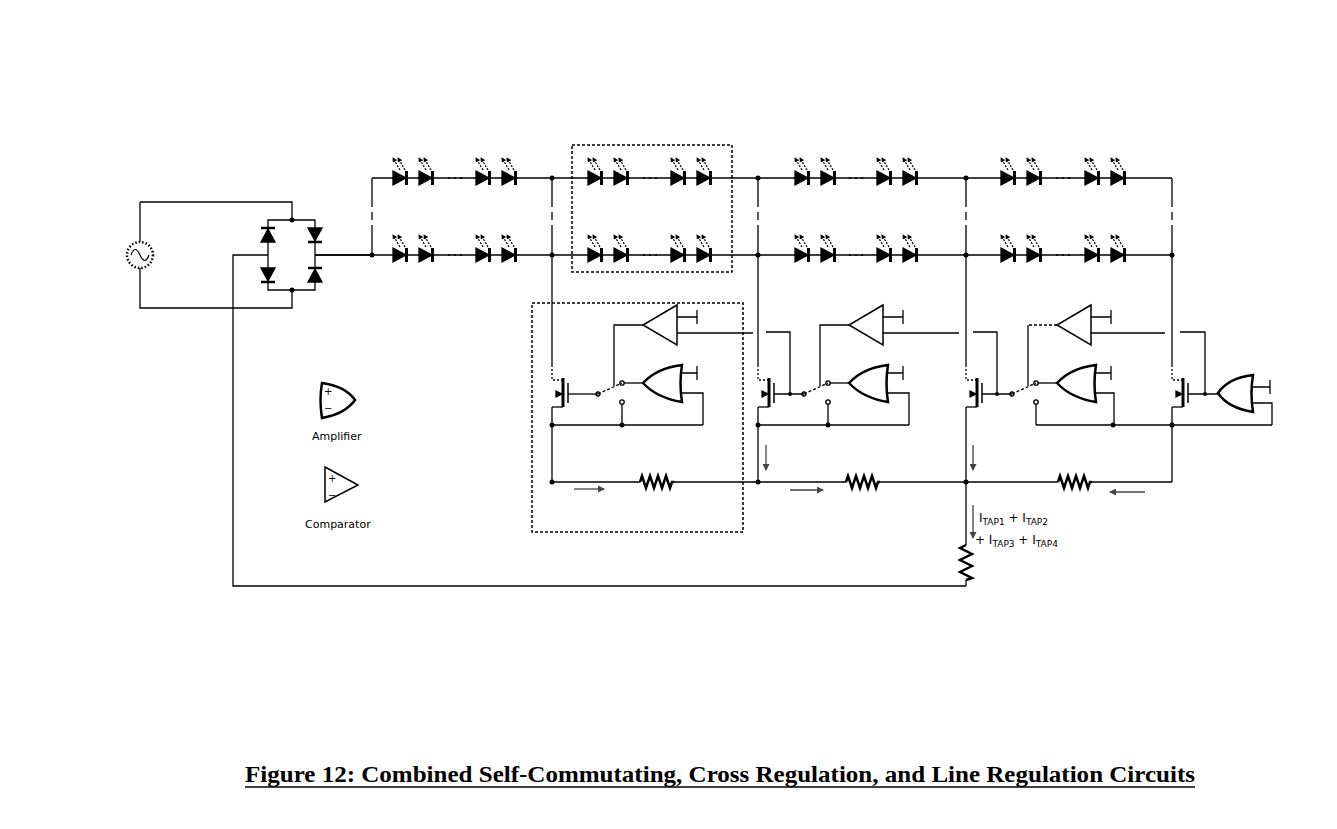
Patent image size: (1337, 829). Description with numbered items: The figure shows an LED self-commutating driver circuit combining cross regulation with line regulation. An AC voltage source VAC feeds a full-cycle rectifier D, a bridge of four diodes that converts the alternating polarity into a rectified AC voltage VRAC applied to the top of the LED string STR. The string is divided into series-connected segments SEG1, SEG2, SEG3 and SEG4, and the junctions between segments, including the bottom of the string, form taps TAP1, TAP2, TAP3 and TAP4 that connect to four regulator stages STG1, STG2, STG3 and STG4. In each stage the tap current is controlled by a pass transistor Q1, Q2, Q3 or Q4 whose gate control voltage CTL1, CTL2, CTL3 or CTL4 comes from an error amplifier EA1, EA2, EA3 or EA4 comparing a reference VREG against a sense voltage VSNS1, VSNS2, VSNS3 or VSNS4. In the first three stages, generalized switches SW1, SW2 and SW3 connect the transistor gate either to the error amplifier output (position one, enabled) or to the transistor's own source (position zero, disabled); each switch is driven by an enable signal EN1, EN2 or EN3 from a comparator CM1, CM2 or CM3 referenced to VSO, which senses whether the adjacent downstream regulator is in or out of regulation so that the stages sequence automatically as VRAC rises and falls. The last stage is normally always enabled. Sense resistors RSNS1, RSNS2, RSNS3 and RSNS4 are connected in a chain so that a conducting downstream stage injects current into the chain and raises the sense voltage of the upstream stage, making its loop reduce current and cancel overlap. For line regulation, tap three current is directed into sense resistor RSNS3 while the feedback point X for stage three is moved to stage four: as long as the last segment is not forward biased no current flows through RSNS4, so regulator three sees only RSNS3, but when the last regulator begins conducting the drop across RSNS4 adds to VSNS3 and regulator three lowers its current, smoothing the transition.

The AC voltage source VAC is at (209, 255).
The full-cycle rectifier D is at (323, 291).
The rectified AC voltage VRAC is at (351, 250).
The LED string STR is at (381, 145).
The first segment SEG1 is at (470, 137).
The second segment SEG2 is at (677, 137).
The third segment SEG3 is at (884, 137).
The fourth segment SEG4 is at (1090, 137).
The first tap TAP1 is at (547, 259).
The second tap TAP2 is at (754, 259).
The third tap TAP3 is at (962, 259).
The fourth tap TAP4 is at (1168, 259).
The first stage STG1 is at (645, 419).
The second stage STG2 is at (860, 419).
The third stage STG3 is at (1068, 419).
The last stage STG4 is at (1138, 385).
The pass transistor Q1 is at (564, 368).
The pass transistor Q2 is at (770, 368).
The pass transistor Q3 is at (978, 370).
The pass transistor Q4 is at (1184, 368).
The gate control voltage CTL1 is at (581, 372).
The gate control voltage CTL2 is at (790, 344).
The gate control voltage CTL3 is at (997, 344).
The gate control voltage CTL4 is at (1207, 330).
The switch SW1 is at (617, 397).
The switch SW2 is at (823, 397).
The switch SW3 is at (1031, 397).
The error amplifier EA1 is at (685, 395).
The error amplifier EA2 is at (891, 395).
The error amplifier EA3 is at (1099, 395).
The error amplifier EA4 is at (1256, 400).
The comparator CM1 is at (697, 331).
The comparator CM2 is at (903, 331).
The comparator CM3 is at (1110, 331).
The enable signal EN1 is at (602, 348).
The enable signal EN2 is at (844, 339).
The enable signal EN3 is at (1052, 339).
The sense voltage VSNS1 is at (627, 443).
The sense voltage VSNS2 is at (833, 443).
The sense voltage VSNS3 is at (1104, 443).
The sense voltage VSNS4 is at (1264, 429).
The sense resistor RSNS1 is at (654, 495).
The sense resistor RSNS2 is at (860, 495).
The sense resistor RSNS3 is at (985, 534).
The sense resistor RSNS4 is at (1069, 495).
The current sense feedback point X is at (1135, 445).
The regulation reference voltage VREG is at (704, 374).
The comparator reference voltage VSO is at (699, 318).